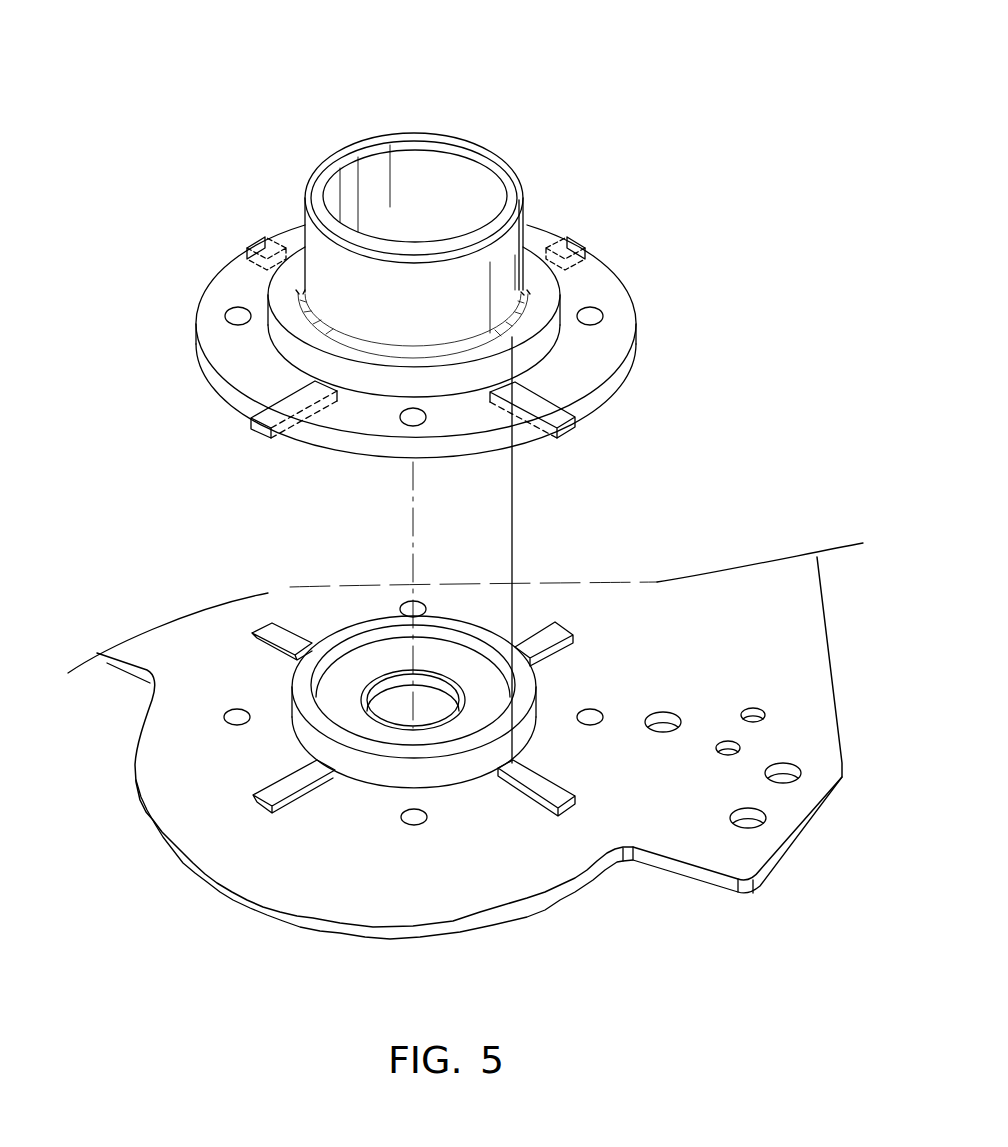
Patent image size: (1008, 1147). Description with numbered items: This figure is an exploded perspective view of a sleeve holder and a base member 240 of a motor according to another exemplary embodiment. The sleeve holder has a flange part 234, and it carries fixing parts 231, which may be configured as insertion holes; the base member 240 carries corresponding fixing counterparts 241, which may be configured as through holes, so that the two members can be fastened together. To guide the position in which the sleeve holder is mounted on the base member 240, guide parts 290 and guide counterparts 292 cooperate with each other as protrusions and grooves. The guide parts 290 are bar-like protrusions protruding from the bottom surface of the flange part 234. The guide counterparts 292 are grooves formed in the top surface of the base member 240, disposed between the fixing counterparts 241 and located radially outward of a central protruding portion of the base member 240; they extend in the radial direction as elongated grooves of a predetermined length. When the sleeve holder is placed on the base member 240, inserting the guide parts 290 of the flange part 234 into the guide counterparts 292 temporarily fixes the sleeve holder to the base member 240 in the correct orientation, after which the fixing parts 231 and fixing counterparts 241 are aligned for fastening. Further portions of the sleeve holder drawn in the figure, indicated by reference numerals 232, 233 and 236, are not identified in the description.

The fixing part 231 is at (588, 313).
The cylindrical hub 232 is at (507, 259).
The boss ring 233 is at (525, 357).
The flange part 234 is at (224, 281).
The bore 236 is at (442, 207).
The base member 240 is at (273, 870).
The fixing counterpart 241 is at (237, 715).
The guide part 290 is at (273, 431).
The guide counterpart 292 is at (270, 638).